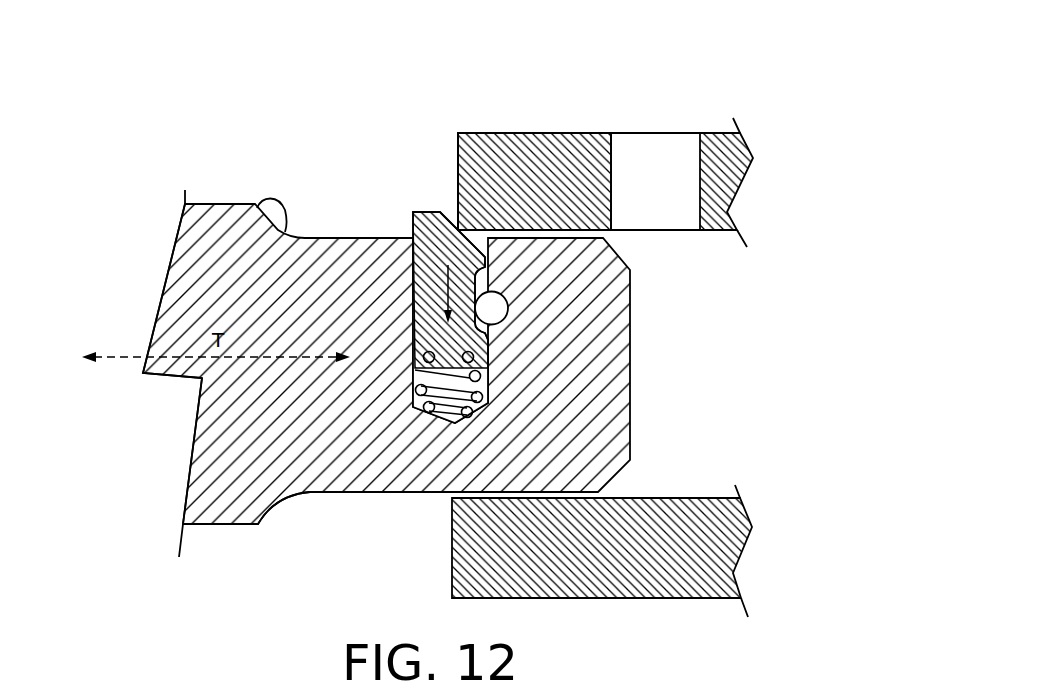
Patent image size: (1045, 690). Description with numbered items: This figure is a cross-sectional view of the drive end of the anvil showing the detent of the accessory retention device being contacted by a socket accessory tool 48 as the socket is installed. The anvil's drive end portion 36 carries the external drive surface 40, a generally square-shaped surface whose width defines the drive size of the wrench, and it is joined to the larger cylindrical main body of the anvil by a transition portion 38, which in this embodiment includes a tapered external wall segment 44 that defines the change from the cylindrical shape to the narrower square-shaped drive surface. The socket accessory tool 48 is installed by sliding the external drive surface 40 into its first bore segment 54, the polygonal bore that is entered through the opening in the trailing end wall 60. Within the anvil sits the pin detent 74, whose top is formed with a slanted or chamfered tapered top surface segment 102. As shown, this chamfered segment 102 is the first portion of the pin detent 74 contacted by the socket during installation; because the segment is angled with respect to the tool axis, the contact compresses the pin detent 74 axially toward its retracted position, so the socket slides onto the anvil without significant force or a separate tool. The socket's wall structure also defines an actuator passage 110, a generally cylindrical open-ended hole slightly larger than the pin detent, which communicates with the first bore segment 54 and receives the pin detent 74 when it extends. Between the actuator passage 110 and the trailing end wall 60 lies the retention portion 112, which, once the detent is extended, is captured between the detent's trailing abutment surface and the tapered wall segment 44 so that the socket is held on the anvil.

The drive end portion 36 is at (333, 238).
The transition portion 38 is at (208, 203).
The external drive surface 40 is at (370, 493).
The tapered external wall segment 44 is at (255, 207).
The socket accessory tool 48 is at (573, 137).
The first bore segment 54 is at (673, 497).
The trailing end wall 60 is at (457, 167).
The pin detent 74 is at (432, 267).
The tapered top surface segment 102 is at (450, 213).
The actuator passage 110 is at (613, 190).
The retention portion 112 is at (547, 203).